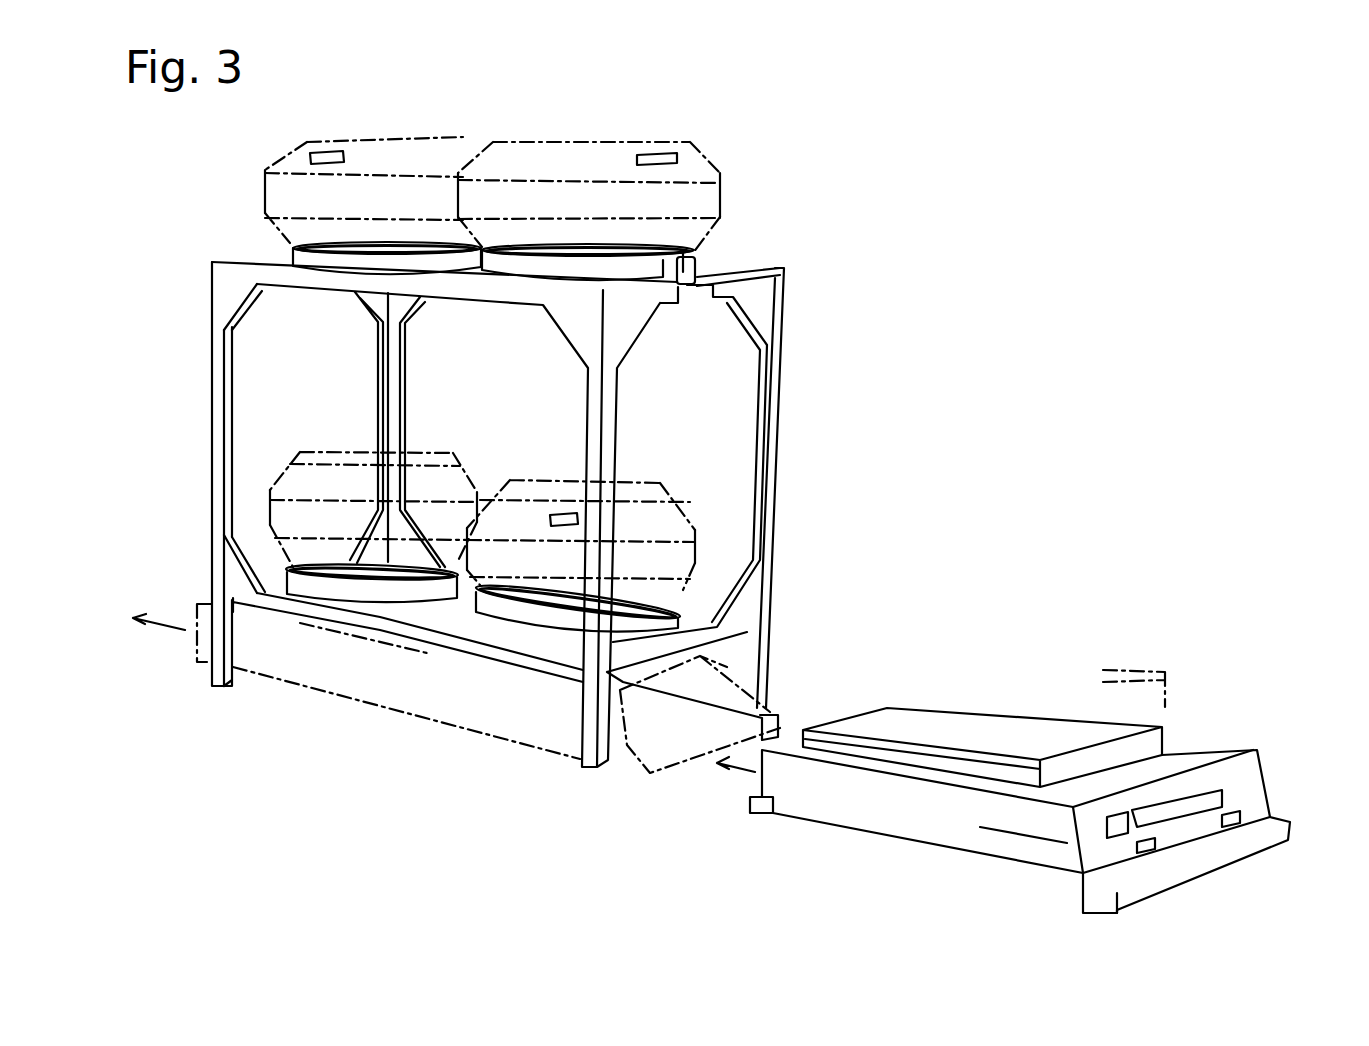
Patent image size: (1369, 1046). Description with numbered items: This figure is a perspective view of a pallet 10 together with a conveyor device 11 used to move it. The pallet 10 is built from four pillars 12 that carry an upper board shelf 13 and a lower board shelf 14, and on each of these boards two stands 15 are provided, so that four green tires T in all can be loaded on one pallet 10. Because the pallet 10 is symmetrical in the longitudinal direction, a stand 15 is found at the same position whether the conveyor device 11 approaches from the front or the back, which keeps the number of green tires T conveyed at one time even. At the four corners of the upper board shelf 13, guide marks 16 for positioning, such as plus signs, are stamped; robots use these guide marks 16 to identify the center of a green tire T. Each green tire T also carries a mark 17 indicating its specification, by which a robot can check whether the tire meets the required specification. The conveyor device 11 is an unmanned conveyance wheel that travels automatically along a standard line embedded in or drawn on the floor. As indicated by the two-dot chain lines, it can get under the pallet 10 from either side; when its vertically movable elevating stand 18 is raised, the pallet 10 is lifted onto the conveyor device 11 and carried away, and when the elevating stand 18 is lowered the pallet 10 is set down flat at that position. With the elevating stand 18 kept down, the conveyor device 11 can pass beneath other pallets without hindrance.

The pallet 10 is at (802, 428).
The conveyor device 11 is at (1214, 722).
The pillar 12 is at (773, 522).
The upper board shelf 13 is at (717, 272).
The lower board shelf 14 is at (692, 612).
The stand 15 is at (694, 260).
The guide mark 16 is at (747, 277).
The mark 17 is at (653, 152).
The elevating stand 18 is at (1032, 737).
The green tire T is at (698, 147).